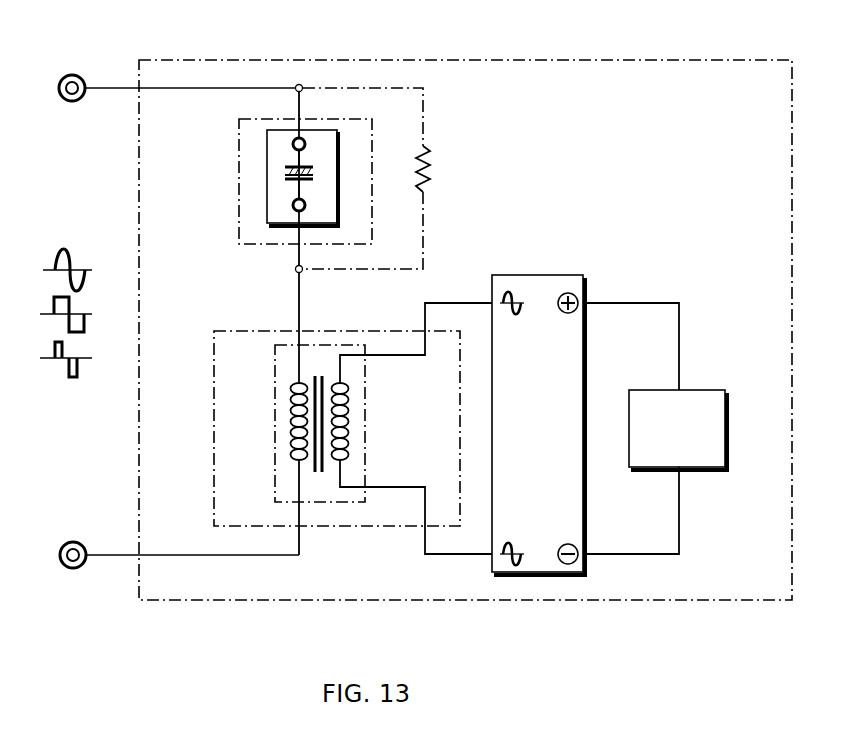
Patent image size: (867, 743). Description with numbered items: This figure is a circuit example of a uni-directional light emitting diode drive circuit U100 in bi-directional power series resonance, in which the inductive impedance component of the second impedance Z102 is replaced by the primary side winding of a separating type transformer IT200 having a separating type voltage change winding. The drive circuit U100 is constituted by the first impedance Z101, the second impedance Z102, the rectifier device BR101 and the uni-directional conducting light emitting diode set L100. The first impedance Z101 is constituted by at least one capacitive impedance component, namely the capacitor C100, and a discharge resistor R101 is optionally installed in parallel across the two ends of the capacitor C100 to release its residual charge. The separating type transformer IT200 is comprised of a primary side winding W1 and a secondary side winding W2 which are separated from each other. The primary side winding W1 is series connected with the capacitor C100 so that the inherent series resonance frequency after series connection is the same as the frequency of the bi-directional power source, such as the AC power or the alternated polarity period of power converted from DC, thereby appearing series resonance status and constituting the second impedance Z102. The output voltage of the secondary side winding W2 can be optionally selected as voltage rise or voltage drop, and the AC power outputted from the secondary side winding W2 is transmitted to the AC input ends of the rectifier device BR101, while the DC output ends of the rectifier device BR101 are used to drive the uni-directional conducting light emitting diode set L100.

The uni-directional light emitting diode drive circuit U100 is at (642, 60).
The first impedance Z101 is at (238, 165).
The capacitor C100 is at (283, 172).
The discharge resistor R101 is at (400, 178).
The second impedance Z102 is at (213, 340).
The separating type transformer IT200 is at (344, 423).
The primary side winding W1 is at (293, 422).
The secondary side winding W2 is at (345, 423).
The rectifier device BR101 is at (547, 275).
The uni-directional conducting light emitting diode set L100 is at (728, 407).